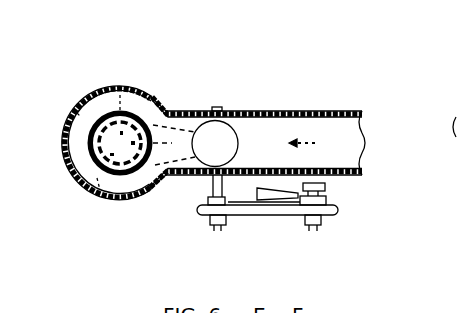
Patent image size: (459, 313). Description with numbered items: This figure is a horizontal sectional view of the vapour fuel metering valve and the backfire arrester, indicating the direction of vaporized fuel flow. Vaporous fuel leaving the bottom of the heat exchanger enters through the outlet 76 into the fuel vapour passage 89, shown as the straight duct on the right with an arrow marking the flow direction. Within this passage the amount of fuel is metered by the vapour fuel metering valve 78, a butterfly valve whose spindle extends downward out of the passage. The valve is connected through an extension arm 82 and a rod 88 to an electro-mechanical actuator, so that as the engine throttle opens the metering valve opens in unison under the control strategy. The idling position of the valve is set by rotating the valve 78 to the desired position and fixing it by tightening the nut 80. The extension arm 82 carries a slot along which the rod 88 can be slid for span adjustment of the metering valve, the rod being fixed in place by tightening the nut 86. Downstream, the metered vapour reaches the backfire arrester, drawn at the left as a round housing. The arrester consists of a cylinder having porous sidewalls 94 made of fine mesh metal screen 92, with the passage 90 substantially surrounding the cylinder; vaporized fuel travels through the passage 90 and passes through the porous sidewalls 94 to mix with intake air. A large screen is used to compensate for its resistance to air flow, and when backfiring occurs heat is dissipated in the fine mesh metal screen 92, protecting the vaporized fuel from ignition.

The outlet 76 is at (322, 145).
The vapour fuel metering valve 78 is at (215, 156).
The nut 80 is at (207, 218).
The extension arm 82 is at (338, 208).
The nut 86 is at (323, 218).
The rod 88 is at (268, 192).
The fuel vapour passage 89 is at (298, 110).
The passage 90 is at (84, 123).
The fine mesh metal screen 92 is at (128, 177).
The porous sidewalls 94 is at (147, 123).